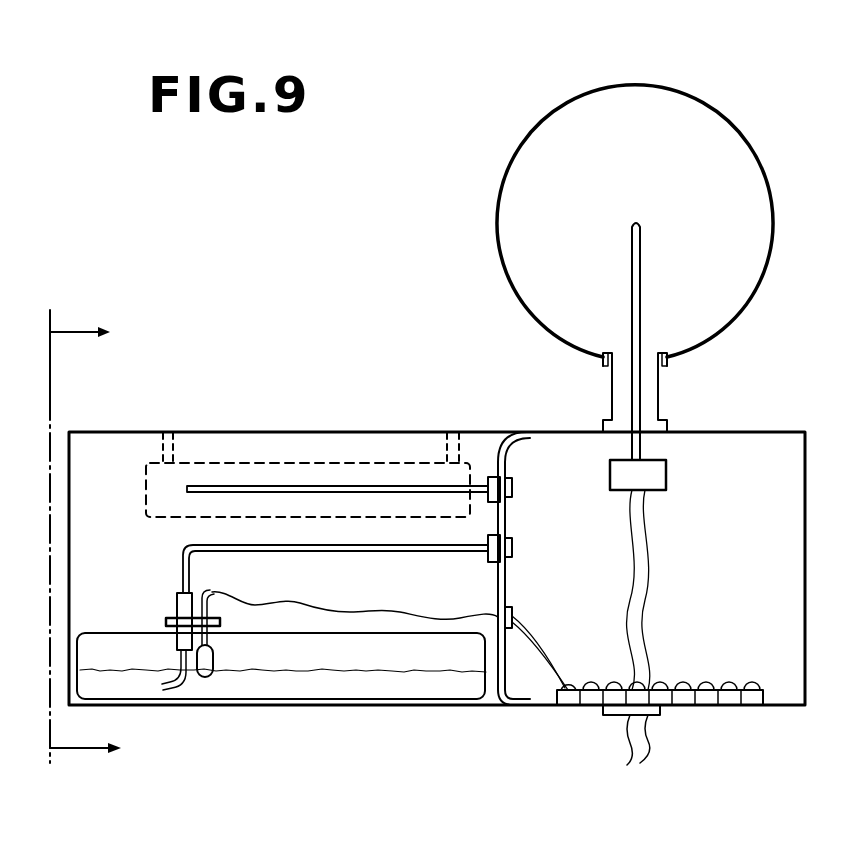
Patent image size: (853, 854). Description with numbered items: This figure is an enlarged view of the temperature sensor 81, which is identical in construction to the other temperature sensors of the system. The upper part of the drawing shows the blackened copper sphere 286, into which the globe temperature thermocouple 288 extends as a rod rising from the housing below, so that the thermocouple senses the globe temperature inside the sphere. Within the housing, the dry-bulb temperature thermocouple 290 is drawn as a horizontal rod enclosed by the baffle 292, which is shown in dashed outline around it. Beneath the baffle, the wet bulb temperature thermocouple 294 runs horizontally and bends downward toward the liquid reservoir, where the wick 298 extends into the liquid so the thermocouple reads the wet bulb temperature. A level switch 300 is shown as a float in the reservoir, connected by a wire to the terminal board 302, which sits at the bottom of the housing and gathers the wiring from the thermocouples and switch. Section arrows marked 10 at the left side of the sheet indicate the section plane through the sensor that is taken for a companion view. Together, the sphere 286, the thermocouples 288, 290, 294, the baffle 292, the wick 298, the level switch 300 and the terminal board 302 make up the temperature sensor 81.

The section line indicator 10 is at (107, 536).
The temperature sensor 81 is at (643, 253).
The blackened copper sphere 286 is at (533, 131).
The globe temperature thermocouple 288 is at (637, 223).
The dry-bulb temperature thermocouple 290 is at (400, 487).
The baffle 292 is at (193, 463).
The wet bulb temperature thermocouple 294 is at (336, 551).
The wick 298 is at (178, 583).
The level switch 300 is at (206, 679).
The terminal board 302 is at (736, 690).